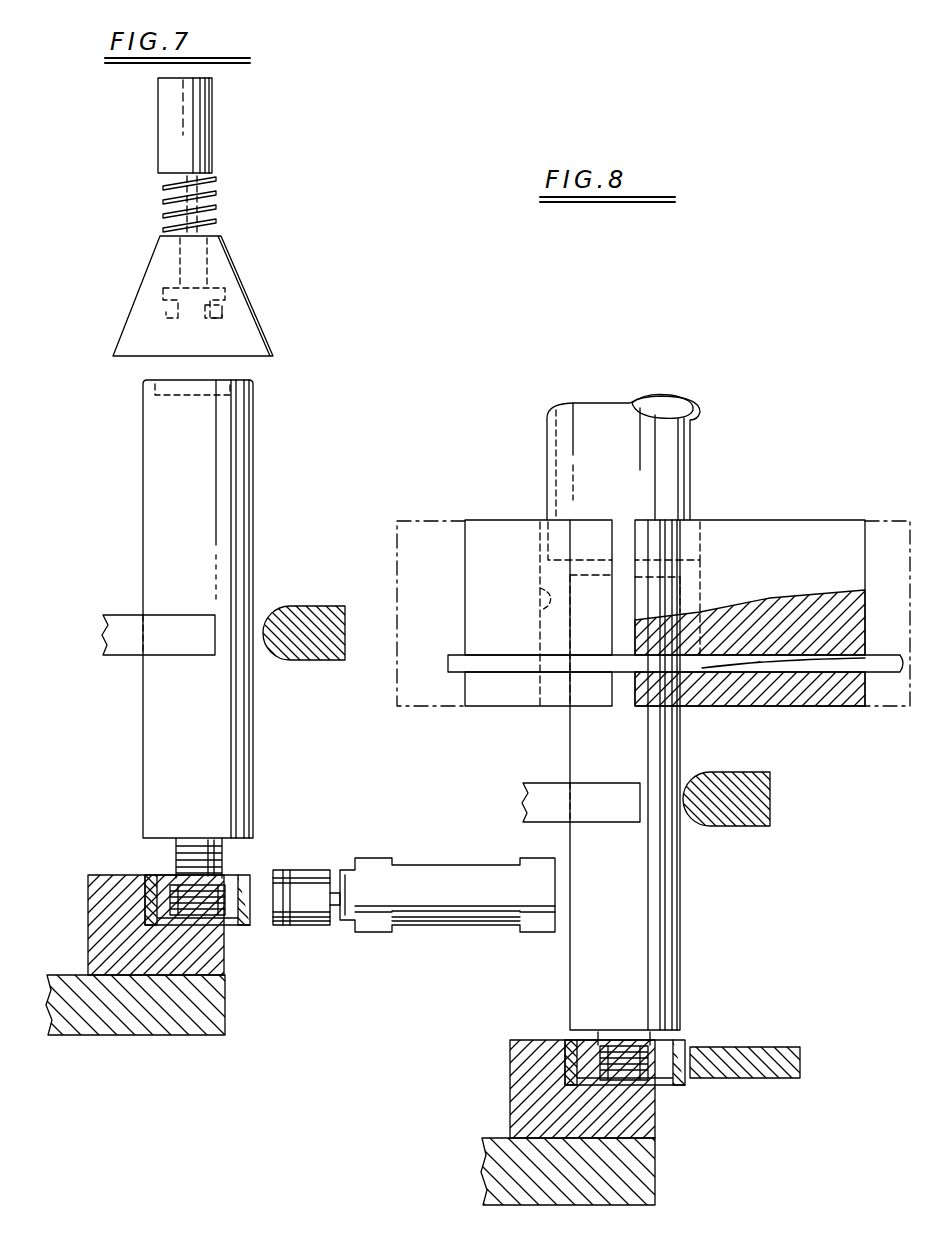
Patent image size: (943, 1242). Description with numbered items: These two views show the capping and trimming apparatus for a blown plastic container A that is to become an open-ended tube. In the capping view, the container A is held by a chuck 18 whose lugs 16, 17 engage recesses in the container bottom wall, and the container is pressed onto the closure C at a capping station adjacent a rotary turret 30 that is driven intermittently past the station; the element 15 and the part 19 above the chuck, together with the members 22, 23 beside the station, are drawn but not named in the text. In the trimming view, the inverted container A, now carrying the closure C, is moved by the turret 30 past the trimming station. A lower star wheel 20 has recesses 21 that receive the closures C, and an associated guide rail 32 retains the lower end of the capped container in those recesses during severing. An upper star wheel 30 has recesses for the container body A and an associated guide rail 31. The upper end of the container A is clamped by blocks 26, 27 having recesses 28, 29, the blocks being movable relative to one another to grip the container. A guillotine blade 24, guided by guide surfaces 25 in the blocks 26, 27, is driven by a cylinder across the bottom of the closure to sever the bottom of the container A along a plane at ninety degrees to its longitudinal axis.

In FIG. 7, the conical holder 15 is at (245, 292).
In FIG. 7, the lug 16 is at (197, 306).
In FIG. 7, the lug 17 is at (232, 318).
In FIG. 7, the chuck 18 is at (232, 214).
In FIG. 7, the plunger 19 is at (212, 133).
In FIG. 7, the lower star wheel 20 is at (113, 918).
In FIG. 8, the lower star wheel 20 is at (530, 1100).
In FIG. 7, the recesses 21 is at (152, 875).
In FIG. 8, the recesses 21 is at (572, 1040).
In FIG. 7, the coupling 22 is at (305, 924).
In FIG. 7, the drive cylinder 23 is at (445, 918).
In FIG. 8, the guillotine blade 24 is at (883, 690).
In FIG. 8, the guide surfaces 25 is at (846, 672).
In FIG. 8, the block 26 is at (497, 520).
In FIG. 8, the block 27 is at (785, 520).
In FIG. 8, the recess 28 is at (540, 588).
In FIG. 8, the recess 29 is at (708, 600).
In FIG. 7, the upper star wheel 30 is at (128, 648).
In FIG. 8, the upper star wheel 30 is at (540, 803).
In FIG. 7, the guide rail 31 is at (318, 650).
In FIG. 8, the guide rail 31 is at (738, 815).
In FIG. 8, the guide rail 32 is at (755, 1080).
In FIG. 7, the container A is at (253, 536).
In FIG. 8, the container A is at (683, 932).
In FIG. 7, the closure C is at (255, 878).
In FIG. 8, the closure C is at (683, 1049).